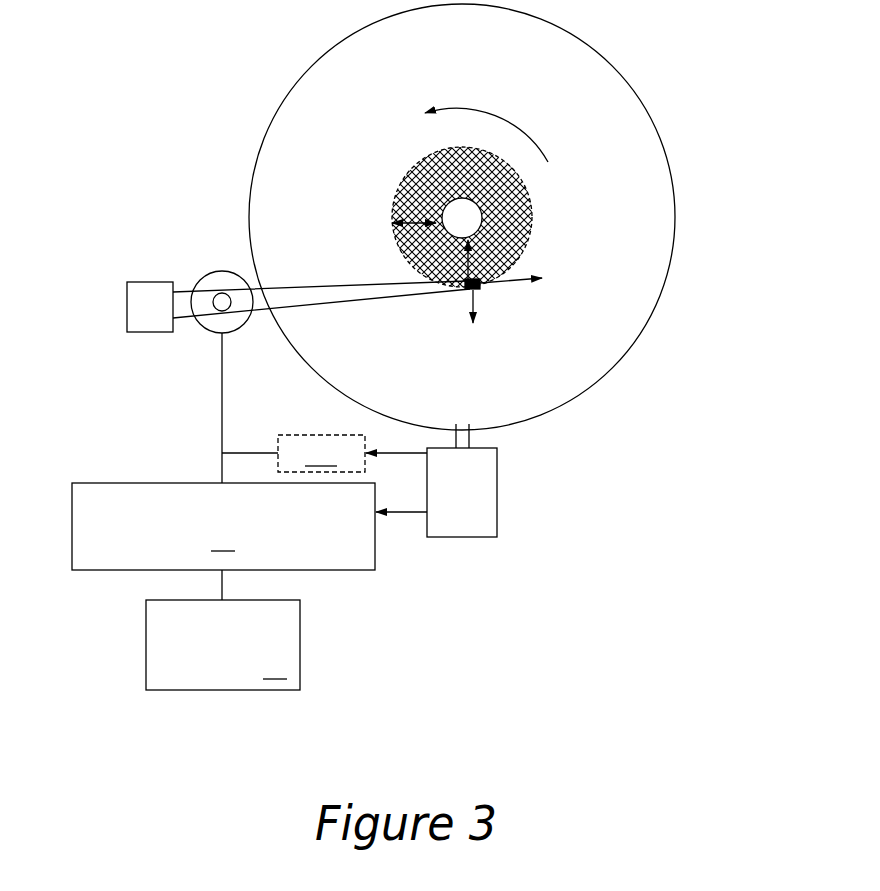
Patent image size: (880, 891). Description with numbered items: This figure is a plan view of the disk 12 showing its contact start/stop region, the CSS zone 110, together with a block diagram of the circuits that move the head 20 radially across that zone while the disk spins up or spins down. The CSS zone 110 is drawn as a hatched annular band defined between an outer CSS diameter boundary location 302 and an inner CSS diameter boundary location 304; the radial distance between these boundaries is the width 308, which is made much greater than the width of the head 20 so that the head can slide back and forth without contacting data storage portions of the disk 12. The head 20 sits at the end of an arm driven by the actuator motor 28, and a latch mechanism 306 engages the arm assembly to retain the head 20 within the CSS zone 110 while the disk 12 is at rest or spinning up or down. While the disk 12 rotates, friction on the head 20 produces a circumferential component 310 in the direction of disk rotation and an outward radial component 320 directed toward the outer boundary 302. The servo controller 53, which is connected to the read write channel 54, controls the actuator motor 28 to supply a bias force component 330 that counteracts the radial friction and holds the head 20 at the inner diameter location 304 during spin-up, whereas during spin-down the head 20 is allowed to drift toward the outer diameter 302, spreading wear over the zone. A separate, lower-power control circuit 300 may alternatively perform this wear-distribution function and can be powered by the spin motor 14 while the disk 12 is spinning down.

The disk 12 is at (672, 180).
The spin motor 14 is at (460, 537).
The head 20 is at (479, 290).
The actuator motor 28 is at (206, 272).
The servo controller 53 is at (223, 526).
The read write channel 54 is at (223, 630).
The CSS zone 110 is at (518, 210).
The control circuit 300 is at (293, 453).
The outer CSS diameter boundary location 302 is at (445, 202).
The inner CSS diameter boundary location 304 is at (402, 180).
The latch mechanism 306 is at (125, 315).
The width 308 is at (420, 225).
The circumferential component 310 is at (512, 283).
The outward radial component 320 is at (470, 296).
The bias force component 330 is at (469, 268).